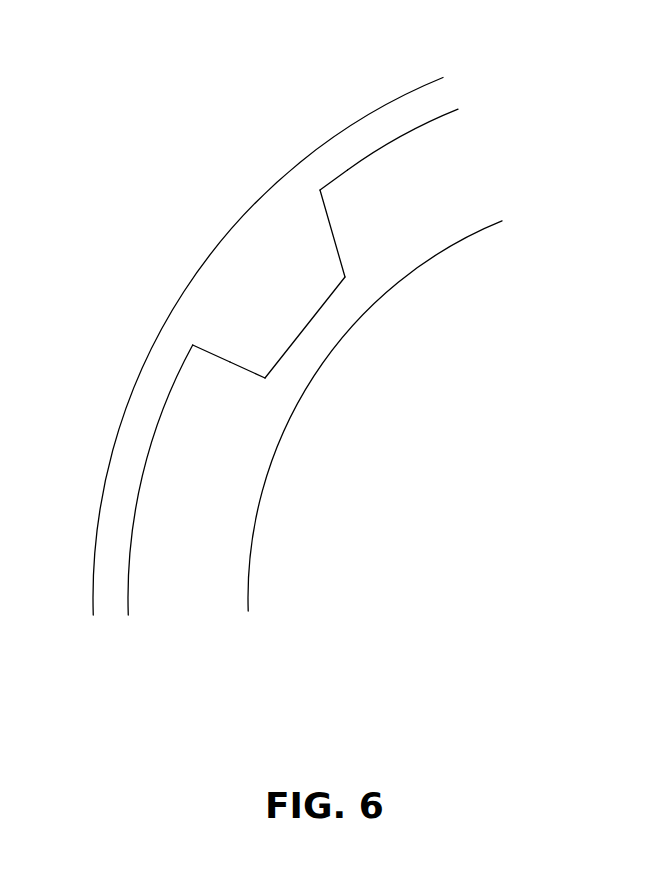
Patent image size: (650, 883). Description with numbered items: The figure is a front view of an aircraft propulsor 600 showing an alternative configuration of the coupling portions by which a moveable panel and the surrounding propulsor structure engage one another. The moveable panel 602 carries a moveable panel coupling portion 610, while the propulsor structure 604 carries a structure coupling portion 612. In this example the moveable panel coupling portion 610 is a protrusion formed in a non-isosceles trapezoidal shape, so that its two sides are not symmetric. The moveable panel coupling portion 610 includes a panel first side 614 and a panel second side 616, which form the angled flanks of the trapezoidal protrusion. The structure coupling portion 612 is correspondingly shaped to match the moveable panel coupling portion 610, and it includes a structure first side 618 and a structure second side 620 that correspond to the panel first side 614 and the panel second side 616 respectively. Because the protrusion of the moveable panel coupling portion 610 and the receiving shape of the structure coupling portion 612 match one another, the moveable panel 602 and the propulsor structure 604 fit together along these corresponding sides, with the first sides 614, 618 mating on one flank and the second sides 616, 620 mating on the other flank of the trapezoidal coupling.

The aircraft propulsor 600 is at (167, 102).
The moveable panel 602 is at (410, 92).
The propulsor structure 604 is at (425, 262).
The moveable panel coupling portion 610 is at (265, 278).
The structure coupling portion 612 is at (298, 332).
The panel first side 614 is at (232, 366).
The panel second side 616 is at (338, 242).
The structure first side 618 is at (213, 358).
The structure second side 620 is at (327, 208).